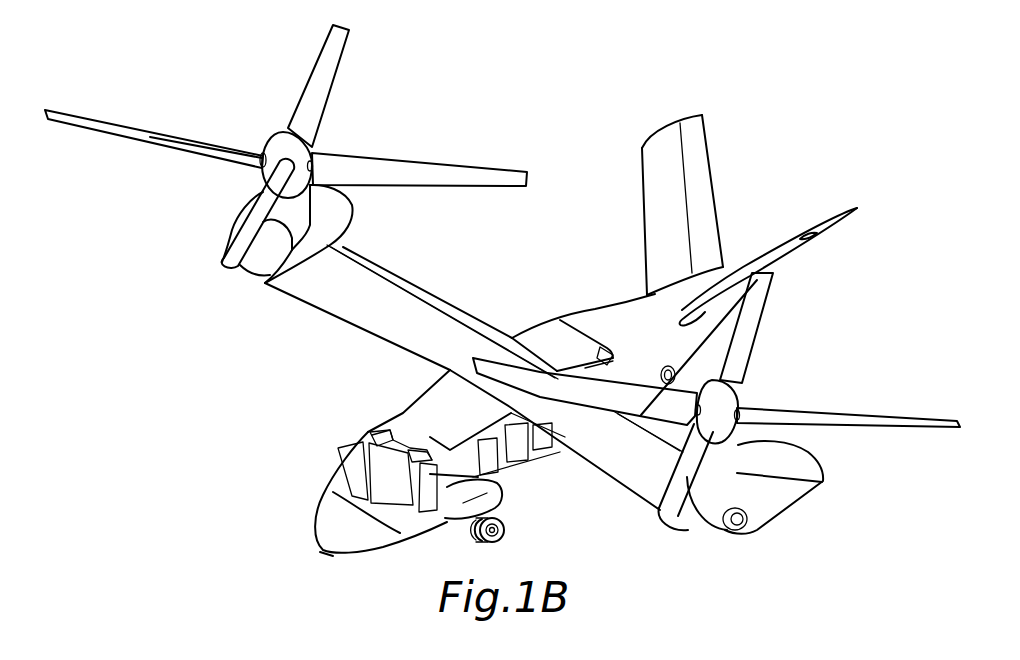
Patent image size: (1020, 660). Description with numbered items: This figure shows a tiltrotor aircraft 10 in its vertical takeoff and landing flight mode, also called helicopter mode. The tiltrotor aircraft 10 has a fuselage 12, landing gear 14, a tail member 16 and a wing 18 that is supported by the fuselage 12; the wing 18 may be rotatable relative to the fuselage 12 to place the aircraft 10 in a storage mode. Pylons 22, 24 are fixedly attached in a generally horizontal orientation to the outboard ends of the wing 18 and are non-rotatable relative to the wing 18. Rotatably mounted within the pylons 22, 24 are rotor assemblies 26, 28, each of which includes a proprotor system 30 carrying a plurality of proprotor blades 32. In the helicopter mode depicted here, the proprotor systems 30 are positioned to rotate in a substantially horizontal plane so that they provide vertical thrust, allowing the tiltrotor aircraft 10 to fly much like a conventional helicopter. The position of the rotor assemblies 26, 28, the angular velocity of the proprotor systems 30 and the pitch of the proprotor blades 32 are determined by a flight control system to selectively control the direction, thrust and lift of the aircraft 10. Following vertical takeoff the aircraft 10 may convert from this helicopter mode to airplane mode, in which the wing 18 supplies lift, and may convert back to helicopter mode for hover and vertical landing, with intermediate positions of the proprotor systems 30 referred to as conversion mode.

The tiltrotor aircraft 10 is at (540, 244).
The fuselage 12 is at (612, 320).
The landing gear 14 is at (502, 532).
The tail member 16 is at (707, 200).
The wing 18 is at (428, 322).
The pylon 22 is at (805, 465).
The pylon 24 is at (345, 208).
The rotor assembly 26 is at (713, 470).
The rotor assembly 28 is at (285, 218).
The proprotor system 30 is at (282, 142).
The proprotor blade 32 is at (120, 120).